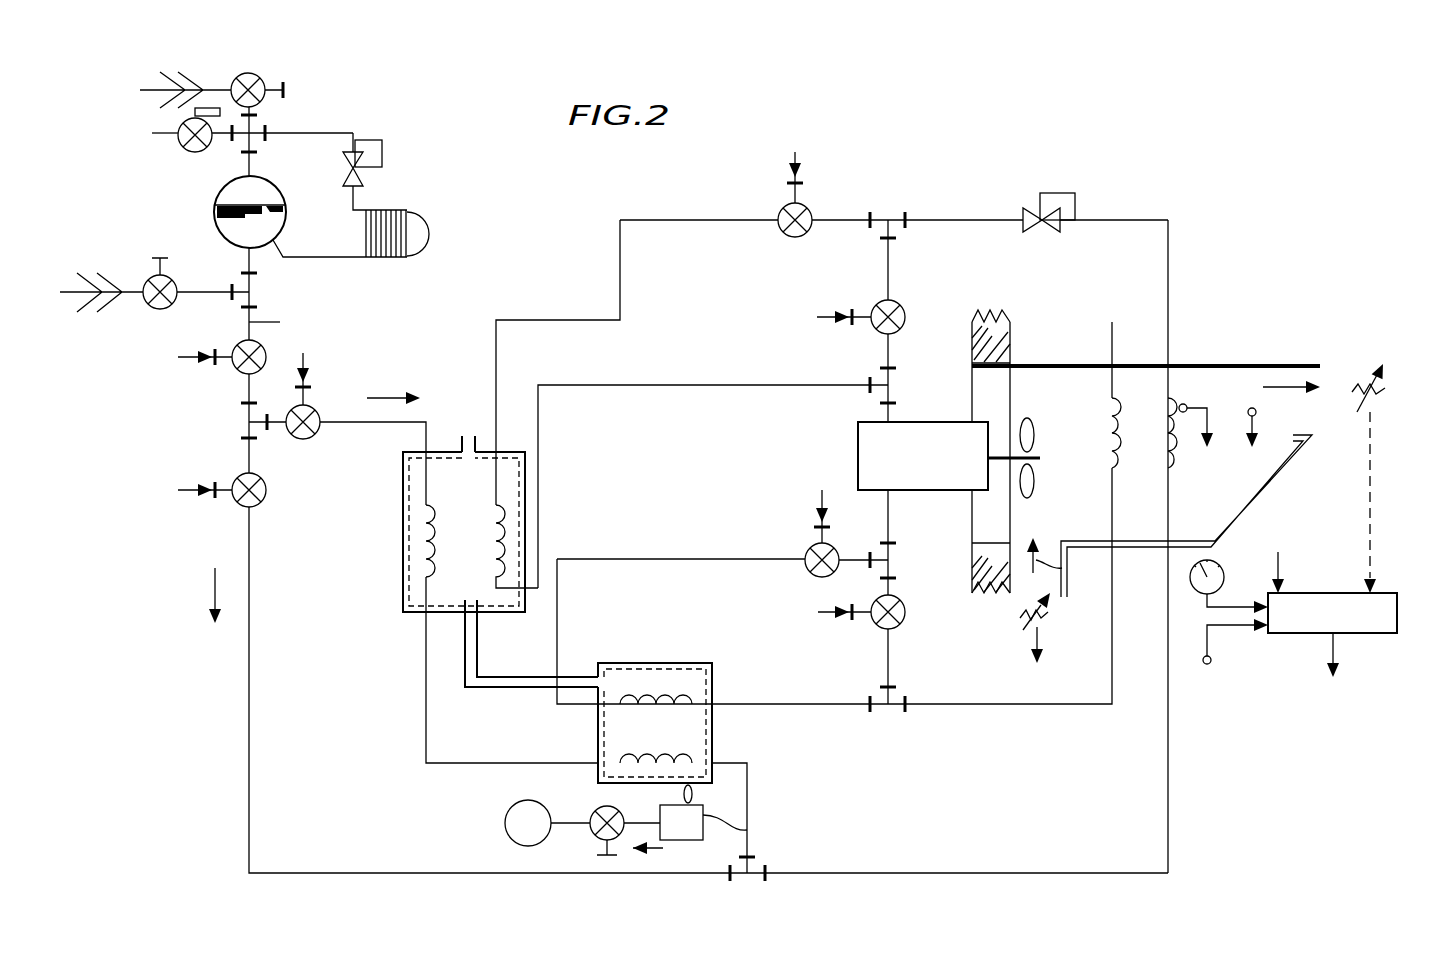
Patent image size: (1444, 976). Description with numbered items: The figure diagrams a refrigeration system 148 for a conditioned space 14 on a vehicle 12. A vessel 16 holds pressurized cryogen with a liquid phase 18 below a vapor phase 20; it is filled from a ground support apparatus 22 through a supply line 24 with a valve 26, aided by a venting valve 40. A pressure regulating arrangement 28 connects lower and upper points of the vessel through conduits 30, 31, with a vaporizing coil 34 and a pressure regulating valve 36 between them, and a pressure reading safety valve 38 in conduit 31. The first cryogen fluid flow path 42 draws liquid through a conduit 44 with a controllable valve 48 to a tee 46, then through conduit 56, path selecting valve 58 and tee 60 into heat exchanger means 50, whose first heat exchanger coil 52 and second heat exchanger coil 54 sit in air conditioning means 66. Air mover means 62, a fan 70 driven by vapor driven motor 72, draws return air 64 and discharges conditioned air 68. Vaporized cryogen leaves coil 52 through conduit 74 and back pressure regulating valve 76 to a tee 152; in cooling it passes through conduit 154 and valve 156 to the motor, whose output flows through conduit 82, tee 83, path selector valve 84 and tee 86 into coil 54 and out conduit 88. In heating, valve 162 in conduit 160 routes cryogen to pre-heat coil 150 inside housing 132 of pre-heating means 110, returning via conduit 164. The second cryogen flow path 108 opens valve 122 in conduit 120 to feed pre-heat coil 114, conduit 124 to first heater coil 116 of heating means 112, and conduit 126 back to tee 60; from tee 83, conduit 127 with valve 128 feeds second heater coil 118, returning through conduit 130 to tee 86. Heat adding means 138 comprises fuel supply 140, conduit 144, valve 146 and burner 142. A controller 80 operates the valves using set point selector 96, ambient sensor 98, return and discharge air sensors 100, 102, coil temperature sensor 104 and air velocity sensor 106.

The vehicle 12 is at (972, 340).
The conditioned space 14 is at (1312, 438).
The vessel 16 is at (330, 229).
The liquid phase 18 is at (226, 240).
The vapor phase 20 is at (268, 180).
The ground support apparatus 22 is at (78, 312).
The supply line 24 is at (197, 295).
The valve 26 is at (148, 282).
The pressure regulating arrangement 28 is at (399, 203).
The conduit 30 is at (285, 250).
The conduit 31 is at (312, 133).
The vaporizing coil 34 is at (412, 258).
The pressure regulating valve 36 is at (345, 170).
The pressure reading safety valve 38 is at (187, 152).
The venting valve 40 is at (262, 78).
The first cryogen fluid flow path 42 is at (213, 597).
The conduit 44 is at (280, 322).
The tee 46 is at (243, 422).
The controllable valve 48 is at (237, 370).
The heat exchanger means 50 is at (1166, 472).
The first heat exchanger coil 52 is at (1178, 462).
The second heat exchanger coil 54 is at (1110, 448).
The conduit 56 is at (249, 722).
The controllable path selecting valve 58 is at (266, 490).
The tee 60 is at (747, 875).
The air mover means 62 is at (939, 533).
The return air 64 is at (1066, 575).
The air conditioning means 66 is at (1270, 362).
The conditioned air 68 is at (1312, 386).
The fan 70 is at (1032, 428).
The vapor driven motor 72 is at (858, 481).
The conduit 74 is at (1168, 235).
The back pressure regulating valve 76 is at (1042, 225).
The controller 80 is at (1365, 633).
The conduit 82 is at (1003, 704).
The tee 83 is at (890, 562).
The controllable path selector valve 84 is at (876, 624).
The tee 86 is at (888, 705).
The conduit 88 is at (1112, 328).
The set point temperature selector 96 is at (1220, 566).
The ambient air temperature sensor 98 is at (1211, 661).
The return air temperature sensor 100 is at (1025, 627).
The discharge air temperature sensor 102 is at (1386, 388).
The temperature sensor 104 is at (1187, 404).
The air velocity sensor 106 is at (1256, 410).
The second cryogen flow path 108 is at (420, 392).
The cryogen pre-heating means 110 is at (407, 612).
The cryogen heating means 112 is at (712, 662).
The pre-heat coil 114 is at (428, 506).
The first heater coil 116 is at (660, 750).
The second heater coil 118 is at (672, 706).
The conduit 120 is at (353, 425).
The controllable path selecting valve 122 is at (316, 410).
The conduit 124 is at (425, 708).
The conduit 126 is at (747, 767).
The conduit 127 is at (737, 558).
The controllable path selecting valve 128 is at (808, 547).
The conduit 130 is at (802, 693).
The housing 132 is at (405, 537).
The means for adding heat 138 is at (478, 867).
The fuel supply 140 is at (505, 835).
The burner 142 is at (749, 830).
The conduit 144 is at (567, 823).
The controllable valve 146 is at (588, 832).
The refrigeration system 148 is at (558, 273).
The pre-heat coil 150 is at (525, 508).
The tee 152 is at (888, 215).
The conduit 154 is at (865, 320).
The controllable path selecting valve 156 is at (900, 305).
The conduit 160 is at (637, 220).
The controllable path selector valve 162 is at (782, 207).
The conduit 164 is at (750, 385).